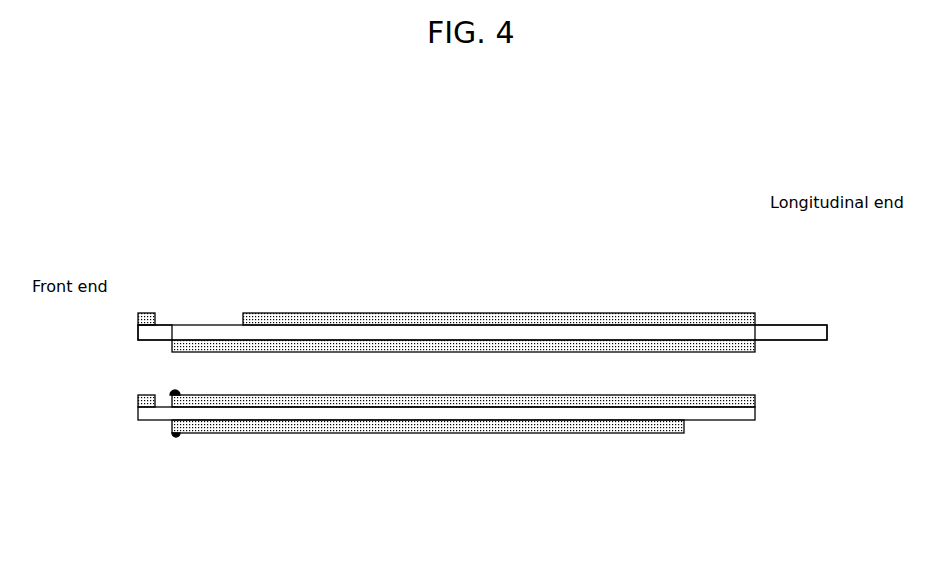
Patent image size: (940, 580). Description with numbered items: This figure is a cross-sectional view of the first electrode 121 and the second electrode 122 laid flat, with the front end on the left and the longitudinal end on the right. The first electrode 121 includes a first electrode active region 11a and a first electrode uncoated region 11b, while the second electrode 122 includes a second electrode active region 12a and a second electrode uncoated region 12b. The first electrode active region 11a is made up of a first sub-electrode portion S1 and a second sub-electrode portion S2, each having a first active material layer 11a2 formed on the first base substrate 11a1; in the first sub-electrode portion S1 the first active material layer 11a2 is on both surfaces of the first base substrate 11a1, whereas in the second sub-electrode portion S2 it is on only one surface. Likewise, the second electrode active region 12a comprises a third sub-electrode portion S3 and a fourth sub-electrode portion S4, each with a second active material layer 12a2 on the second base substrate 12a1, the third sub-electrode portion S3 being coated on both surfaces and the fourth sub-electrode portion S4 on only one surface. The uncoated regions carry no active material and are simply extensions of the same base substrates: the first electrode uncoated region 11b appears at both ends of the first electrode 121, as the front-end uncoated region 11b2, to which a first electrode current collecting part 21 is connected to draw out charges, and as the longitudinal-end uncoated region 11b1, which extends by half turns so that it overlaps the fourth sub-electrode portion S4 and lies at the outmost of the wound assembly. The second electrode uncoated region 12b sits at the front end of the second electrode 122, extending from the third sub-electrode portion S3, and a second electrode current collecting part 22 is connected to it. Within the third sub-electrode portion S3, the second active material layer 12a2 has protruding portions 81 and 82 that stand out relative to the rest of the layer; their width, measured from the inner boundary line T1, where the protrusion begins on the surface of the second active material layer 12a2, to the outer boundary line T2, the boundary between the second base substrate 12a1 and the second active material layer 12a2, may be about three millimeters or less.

The first electrode 121 is at (501, 244).
The second electrode 122 is at (507, 467).
The first electrode active region 11a is at (461, 238).
The first base substrate 11a1 is at (192, 334).
The first active material layer 11a2 is at (356, 283).
The first electrode uncoated region 11b is at (606, 222).
The first electrode uncoated region of the longitudinal end 11b1 is at (793, 335).
The first electrode uncoated region of the front end 11b2 is at (138, 328).
The second electrode active region 12a is at (474, 487).
The second base substrate 12a1 is at (228, 412).
The second active material layer 12a2 is at (190, 428).
The second electrode uncoated region 12b is at (138, 414).
The first electrode current collecting part 21 is at (145, 313).
The second electrode current collecting part 22 is at (138, 396).
The protruding portion 81 is at (175, 388).
The protruding portion 82 is at (174, 438).
The first sub-electrode portion S1 is at (483, 221).
The second sub-electrode portion S2 is at (258, 206).
The third sub-electrode portion S3 is at (325, 501).
The fourth sub-electrode portion S4 is at (782, 501).
The inner boundary line T1 is at (182, 393).
The outer boundary line T2 is at (169, 393).